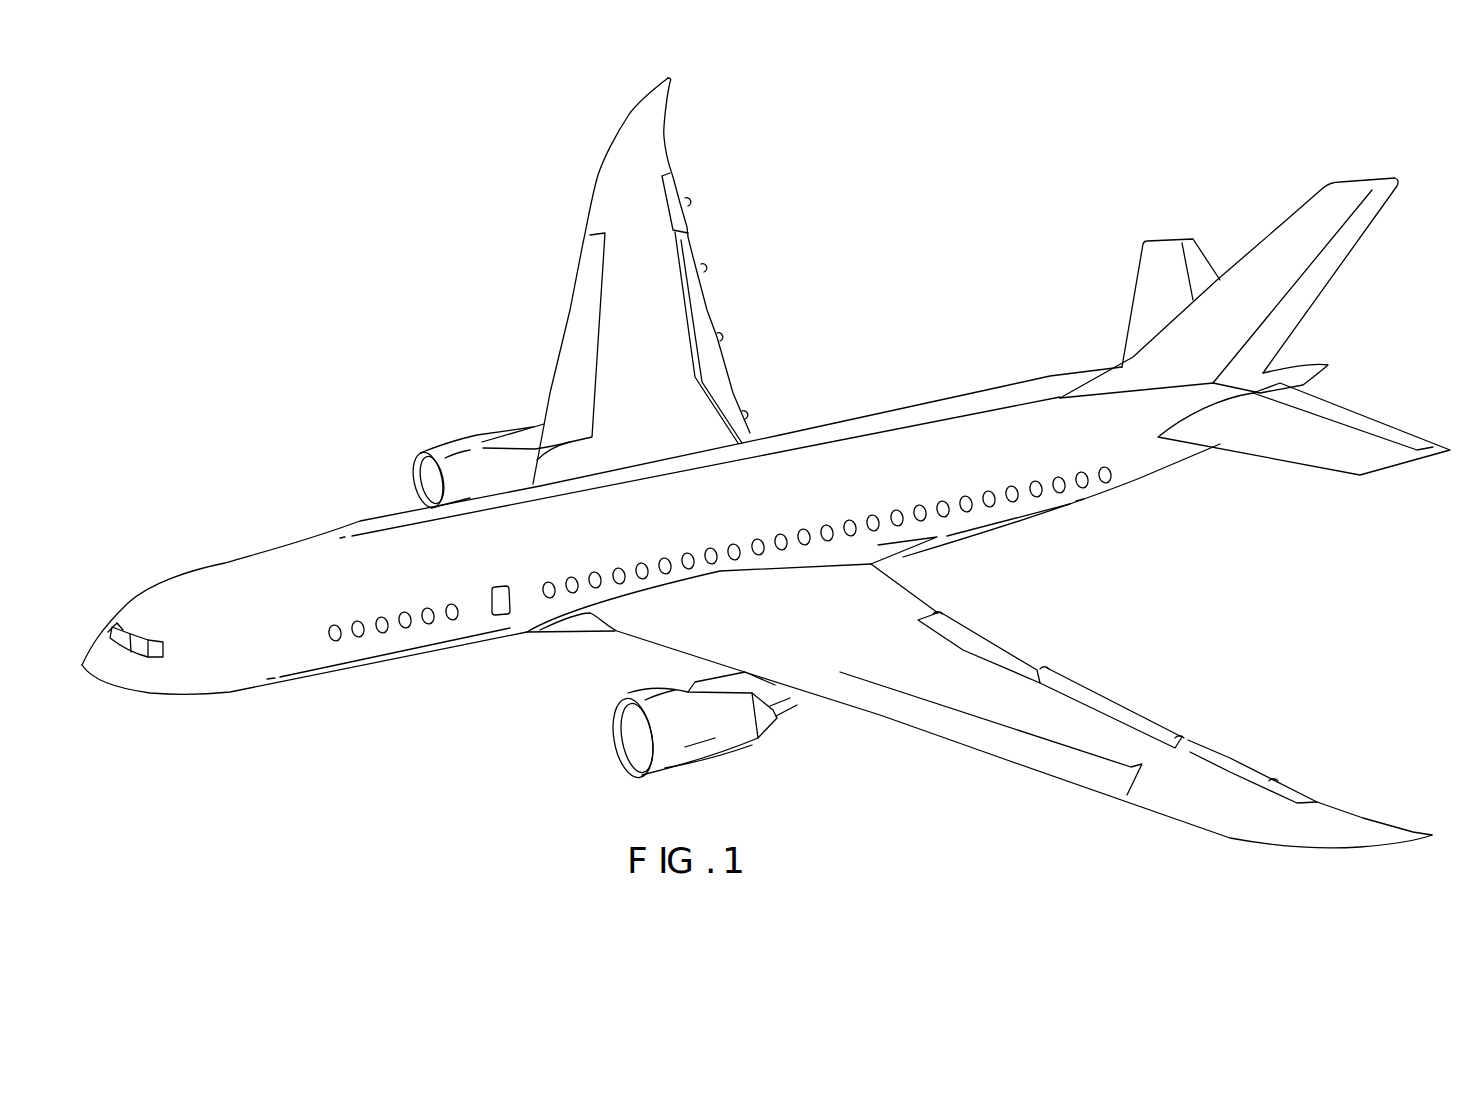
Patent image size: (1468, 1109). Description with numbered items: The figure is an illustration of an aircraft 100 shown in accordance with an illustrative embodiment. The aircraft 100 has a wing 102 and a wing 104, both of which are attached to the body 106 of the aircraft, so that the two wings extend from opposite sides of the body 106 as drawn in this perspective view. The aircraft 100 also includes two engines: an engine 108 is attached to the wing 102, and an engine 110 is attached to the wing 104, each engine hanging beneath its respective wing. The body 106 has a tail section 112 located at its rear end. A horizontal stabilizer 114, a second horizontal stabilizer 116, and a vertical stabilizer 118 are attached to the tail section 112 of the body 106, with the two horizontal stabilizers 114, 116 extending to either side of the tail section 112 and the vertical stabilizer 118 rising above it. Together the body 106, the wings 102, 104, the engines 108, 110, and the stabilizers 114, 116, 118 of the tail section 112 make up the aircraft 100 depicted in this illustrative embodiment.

The aircraft 100 is at (368, 240).
The wing 102 is at (598, 170).
The wing 104 is at (1310, 848).
The body 106 is at (268, 545).
The engine 108 is at (458, 438).
The engine 110 is at (707, 768).
The tail section 112 is at (1207, 503).
The horizontal stabilizer 114 is at (1133, 297).
The horizontal stabilizer 116 is at (1307, 465).
The vertical stabilizer 118 is at (1338, 270).